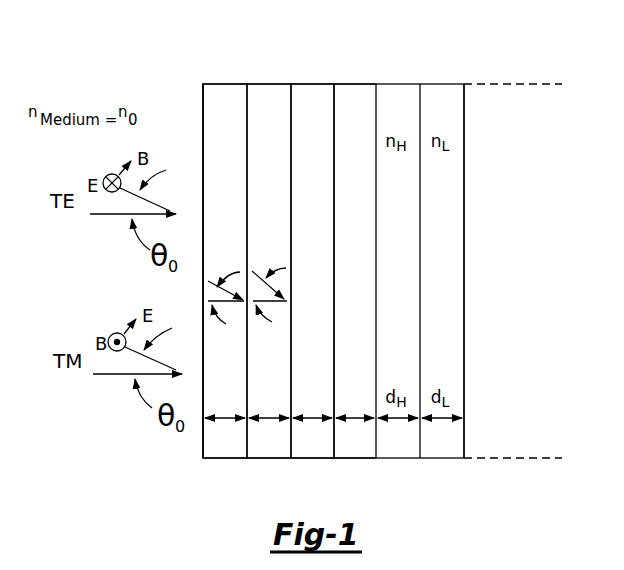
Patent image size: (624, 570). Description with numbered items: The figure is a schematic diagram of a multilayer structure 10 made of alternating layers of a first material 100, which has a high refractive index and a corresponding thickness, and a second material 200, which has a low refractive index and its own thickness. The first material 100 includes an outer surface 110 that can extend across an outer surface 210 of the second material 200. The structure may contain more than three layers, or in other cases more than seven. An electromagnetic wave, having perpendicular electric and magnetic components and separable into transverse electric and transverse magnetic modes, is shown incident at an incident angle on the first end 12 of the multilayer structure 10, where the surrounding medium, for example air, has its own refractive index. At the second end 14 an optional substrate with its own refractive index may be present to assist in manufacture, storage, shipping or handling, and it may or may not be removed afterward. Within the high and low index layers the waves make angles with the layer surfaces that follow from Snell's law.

The multilayer structure 10 is at (171, 74).
The first end 12 is at (201, 442).
The second end 14 is at (467, 337).
The first material 100 is at (223, 83).
The second material 200 is at (271, 83).
The outer surface 110 is at (334, 107).
The outer surface 210 is at (420, 107).